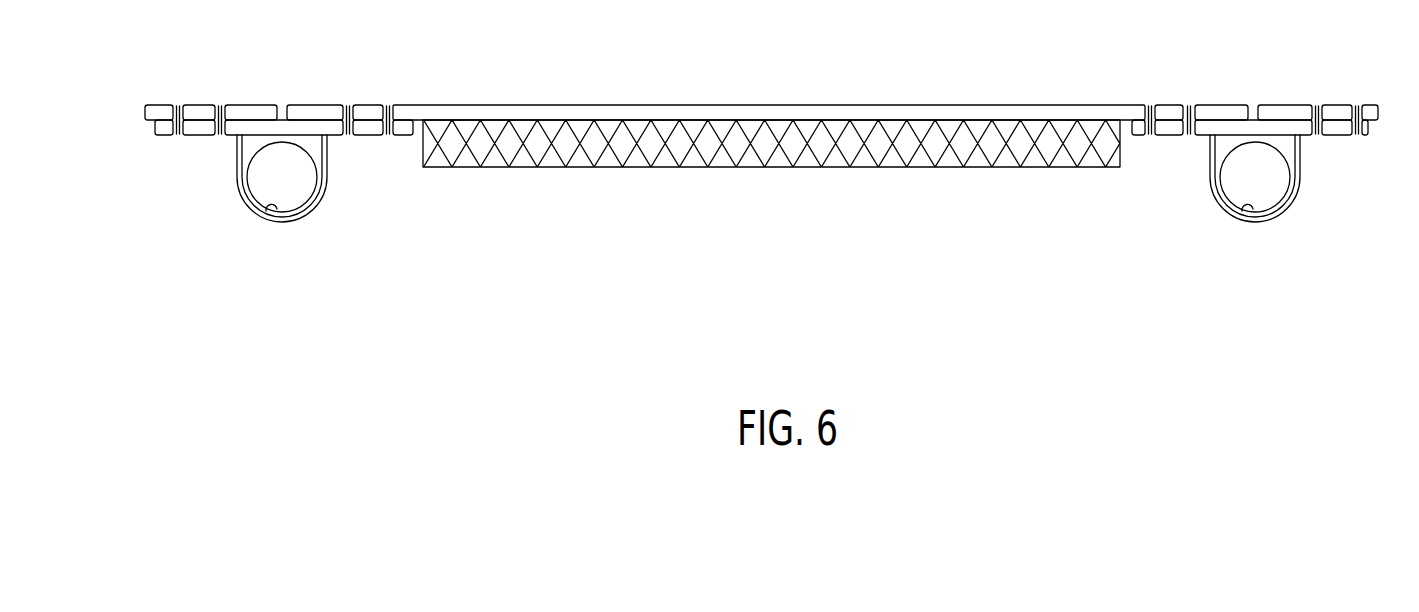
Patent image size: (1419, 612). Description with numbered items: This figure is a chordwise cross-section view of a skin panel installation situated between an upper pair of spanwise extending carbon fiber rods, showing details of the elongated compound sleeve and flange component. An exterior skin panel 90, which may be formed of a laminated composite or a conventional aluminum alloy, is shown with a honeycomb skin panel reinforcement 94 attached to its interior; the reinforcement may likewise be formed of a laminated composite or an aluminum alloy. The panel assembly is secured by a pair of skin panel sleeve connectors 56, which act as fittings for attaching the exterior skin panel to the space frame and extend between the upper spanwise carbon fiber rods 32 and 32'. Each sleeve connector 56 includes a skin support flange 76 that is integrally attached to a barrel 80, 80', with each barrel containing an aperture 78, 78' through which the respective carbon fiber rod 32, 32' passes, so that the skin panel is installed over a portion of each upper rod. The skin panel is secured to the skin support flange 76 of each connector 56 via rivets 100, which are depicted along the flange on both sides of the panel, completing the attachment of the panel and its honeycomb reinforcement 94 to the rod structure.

The upper carbon fiber rod 32 is at (305, 180).
The upper carbon fiber rod 32' is at (1281, 180).
The skin panel sleeve connector 56 is at (194, 230).
The skin support flange 76 is at (405, 135).
The aperture 78 is at (256, 238).
The aperture 78' is at (1232, 238).
The barrel 80 is at (253, 178).
The barrel 80' is at (1226, 178).
The exterior skin panel 90 is at (693, 112).
The honeycomb skin panel reinforcement 94 is at (807, 147).
The rivets 100 is at (180, 104).